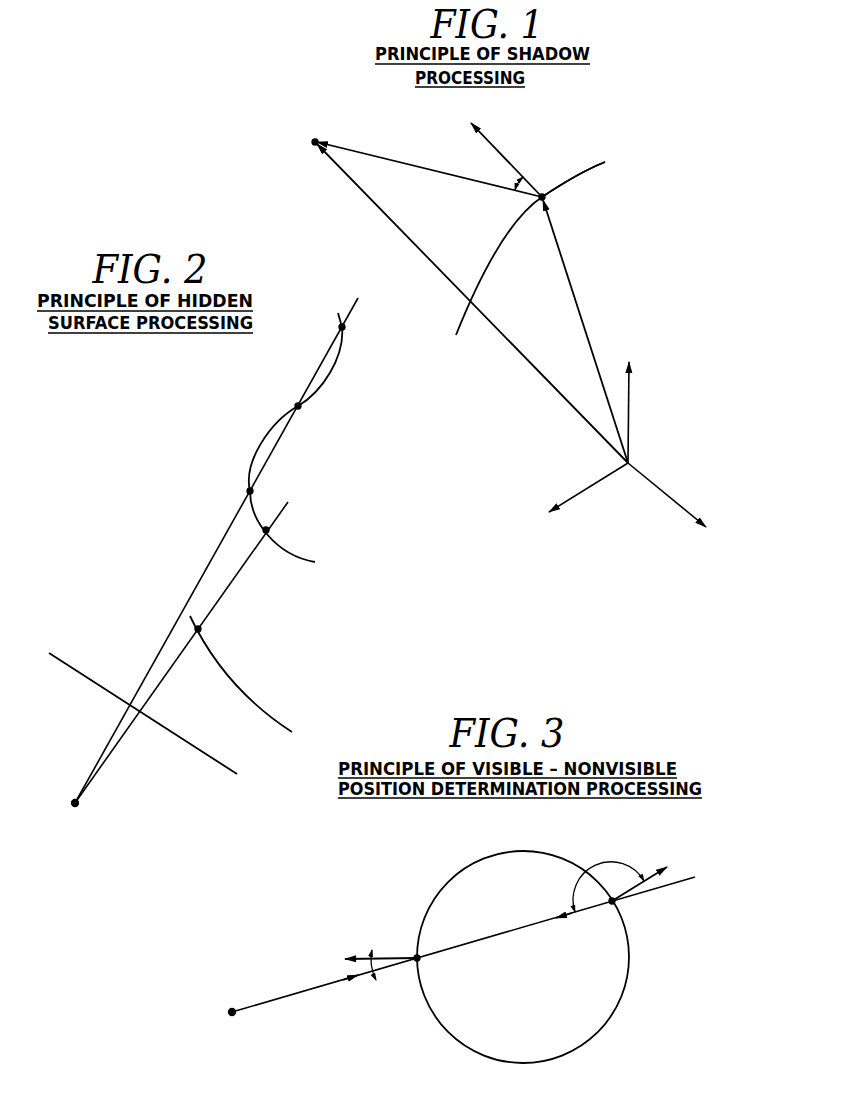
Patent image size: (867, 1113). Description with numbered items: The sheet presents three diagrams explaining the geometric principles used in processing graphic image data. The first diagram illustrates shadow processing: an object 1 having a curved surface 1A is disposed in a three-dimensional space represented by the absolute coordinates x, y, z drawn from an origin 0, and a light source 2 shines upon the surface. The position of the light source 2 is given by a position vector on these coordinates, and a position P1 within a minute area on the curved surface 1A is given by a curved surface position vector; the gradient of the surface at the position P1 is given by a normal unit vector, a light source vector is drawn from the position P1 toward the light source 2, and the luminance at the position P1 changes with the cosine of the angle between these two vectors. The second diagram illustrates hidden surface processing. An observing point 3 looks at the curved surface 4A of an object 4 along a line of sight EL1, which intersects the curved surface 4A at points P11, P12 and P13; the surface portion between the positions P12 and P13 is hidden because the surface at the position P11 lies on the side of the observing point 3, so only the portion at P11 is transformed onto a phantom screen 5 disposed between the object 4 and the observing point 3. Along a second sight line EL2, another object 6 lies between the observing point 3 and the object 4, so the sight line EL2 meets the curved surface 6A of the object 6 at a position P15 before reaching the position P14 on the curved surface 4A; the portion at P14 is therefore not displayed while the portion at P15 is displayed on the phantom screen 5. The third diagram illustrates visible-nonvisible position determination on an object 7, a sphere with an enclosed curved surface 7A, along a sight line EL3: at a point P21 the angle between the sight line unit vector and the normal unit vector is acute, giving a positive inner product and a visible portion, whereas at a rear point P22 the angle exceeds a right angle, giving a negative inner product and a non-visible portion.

In FIG. 1, the object 1 is at (458, 323).
In FIG. 1, the curved surface 1A is at (578, 166).
In FIG. 1, the light source 2 is at (312, 143).
In FIG. 2, the observing point 3 is at (75, 816).
In FIG. 3, the observing point 3 is at (230, 1015).
In FIG. 2, the object 4 is at (300, 561).
In FIG. 2, the curved surface 4A is at (256, 445).
In FIG. 2, the phantom screen 5 is at (80, 670).
In FIG. 2, the object 6 is at (281, 727).
In FIG. 2, the curved surface 6A is at (248, 698).
In FIG. 3, the object 7 is at (458, 1045).
In FIG. 3, the enclosed curved surface 7A is at (577, 1051).
In FIG. 1, the coordinate origin 0 is at (628, 472).
In FIG. 1, the absolute coordinate x is at (536, 518).
In FIG. 1, the absolute coordinate y is at (719, 532).
In FIG. 1, the absolute coordinate z is at (630, 348).
In FIG. 1, the position P1 is at (548, 198).
In FIG. 2, the point of intersection P11 is at (254, 490).
In FIG. 2, the point of intersection P12 is at (302, 408).
In FIG. 2, the point of intersection P13 is at (347, 331).
In FIG. 2, the position P14 is at (270, 530).
In FIG. 2, the position P15 is at (203, 629).
In FIG. 3, the point P21 is at (415, 963).
In FIG. 3, the point P22 is at (613, 905).
In FIG. 2, the line of sight EL1 is at (160, 651).
In FIG. 2, the sight line EL2 is at (185, 648).
In FIG. 3, the sight line EL3 is at (258, 1003).